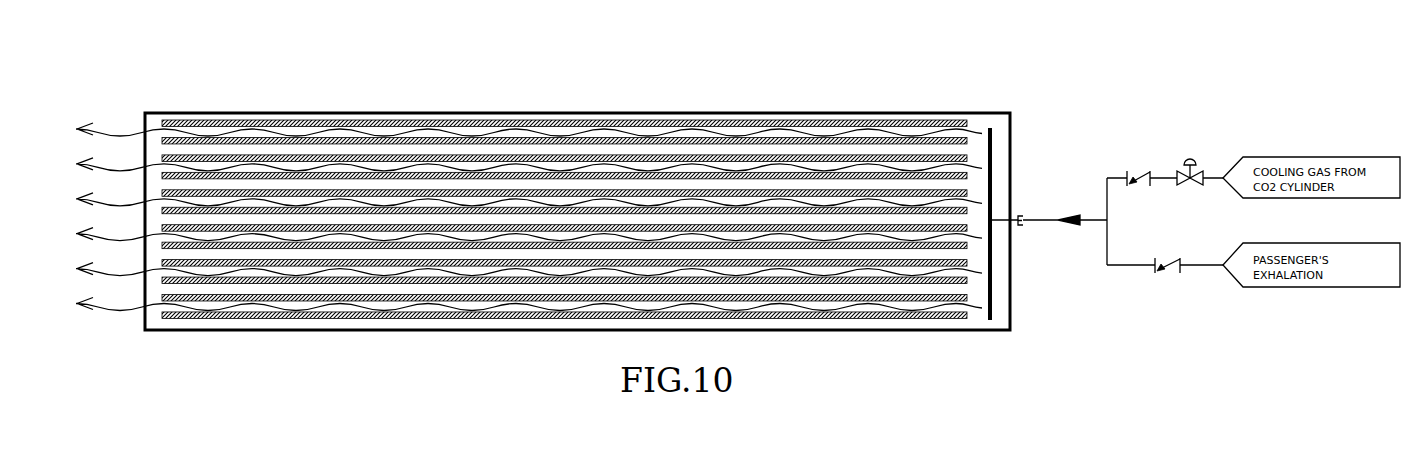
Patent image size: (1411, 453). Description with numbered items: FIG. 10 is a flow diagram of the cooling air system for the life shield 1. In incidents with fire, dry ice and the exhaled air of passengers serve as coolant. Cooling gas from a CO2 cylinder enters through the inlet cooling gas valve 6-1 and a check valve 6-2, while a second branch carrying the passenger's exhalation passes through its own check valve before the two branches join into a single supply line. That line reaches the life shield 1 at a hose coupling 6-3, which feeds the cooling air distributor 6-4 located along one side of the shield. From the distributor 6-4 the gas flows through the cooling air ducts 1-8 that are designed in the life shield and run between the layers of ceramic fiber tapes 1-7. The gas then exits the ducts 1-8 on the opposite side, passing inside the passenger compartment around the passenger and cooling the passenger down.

The life shield 1 is at (672, 113).
The ceramic fiber tapes 1-7 is at (452, 191).
The cooling air ducts 1-8 is at (302, 205).
The inlet cooling gas valve 6-1 is at (1191, 157).
The check valve 6-2 is at (1143, 168).
The hose coupling 6-3 is at (1022, 215).
The cooling air distributor 6-4 is at (992, 141).